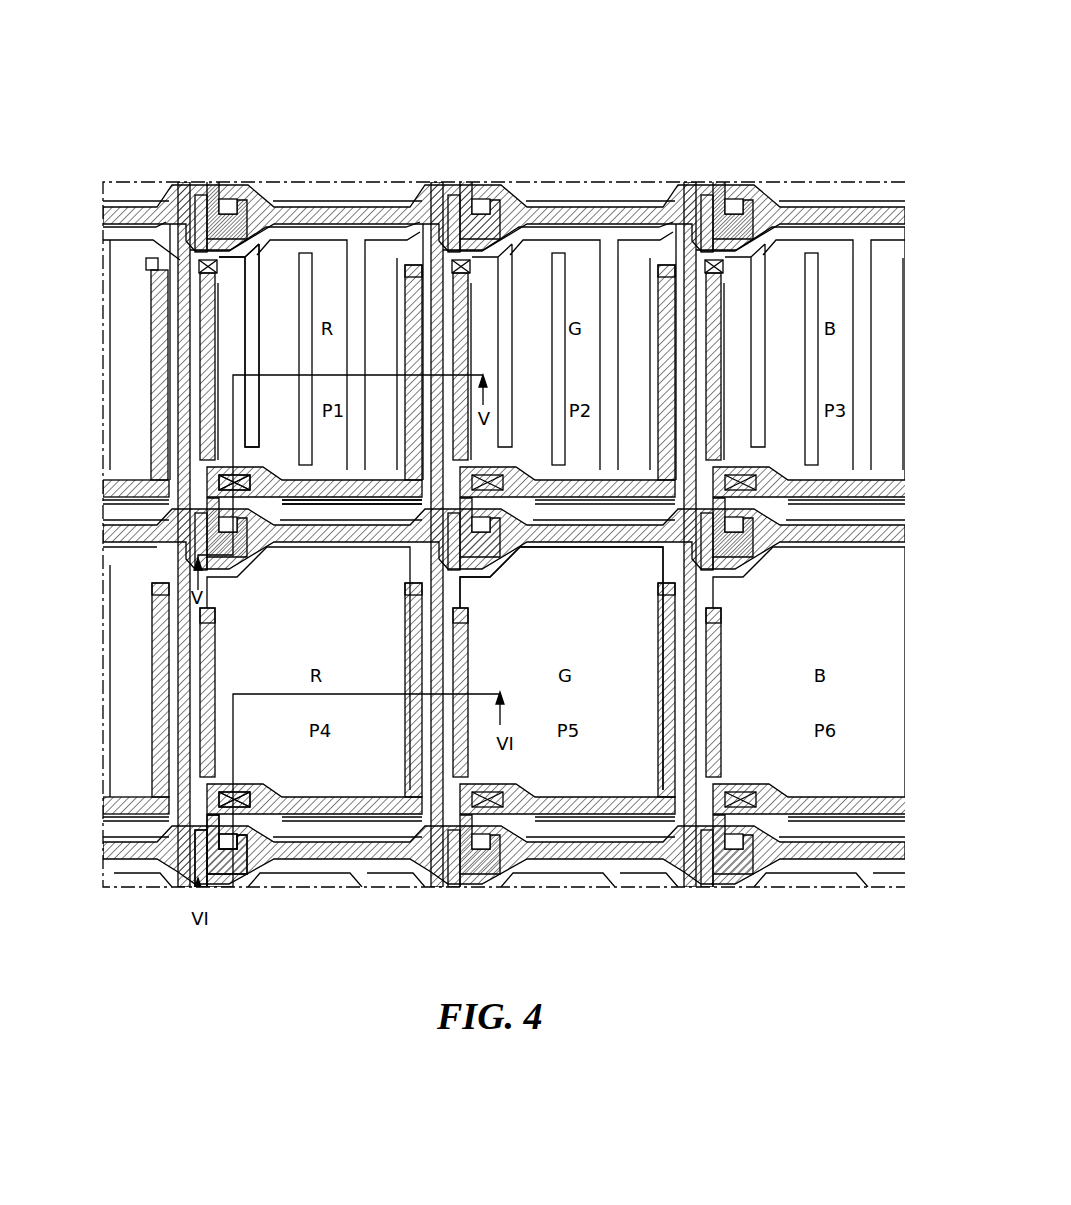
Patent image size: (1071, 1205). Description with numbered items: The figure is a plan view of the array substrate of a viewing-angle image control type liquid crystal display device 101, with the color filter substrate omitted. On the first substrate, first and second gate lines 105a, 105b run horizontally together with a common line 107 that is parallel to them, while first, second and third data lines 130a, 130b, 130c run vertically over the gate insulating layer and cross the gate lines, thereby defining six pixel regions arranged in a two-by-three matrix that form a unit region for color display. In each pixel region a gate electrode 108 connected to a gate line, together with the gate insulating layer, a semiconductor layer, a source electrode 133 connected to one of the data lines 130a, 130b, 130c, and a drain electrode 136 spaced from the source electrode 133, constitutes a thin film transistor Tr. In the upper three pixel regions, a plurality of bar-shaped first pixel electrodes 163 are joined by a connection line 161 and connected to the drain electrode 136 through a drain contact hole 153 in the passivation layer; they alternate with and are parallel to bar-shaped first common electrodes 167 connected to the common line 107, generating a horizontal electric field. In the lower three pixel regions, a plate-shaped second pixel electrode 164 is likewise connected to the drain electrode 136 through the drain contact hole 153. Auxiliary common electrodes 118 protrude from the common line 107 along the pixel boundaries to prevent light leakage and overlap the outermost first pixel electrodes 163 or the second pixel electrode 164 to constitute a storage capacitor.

The viewing-angle image control type liquid crystal display device 101 is at (875, 142).
The first gate line 105a is at (320, 535).
The second gate line 105b is at (305, 850).
The common line 107 is at (362, 492).
The gate electrode 108 is at (197, 880).
The auxiliary common electrodes 118 is at (212, 303).
The first data line 130a is at (183, 402).
The second data line 130b is at (438, 353).
The third data line 130c is at (690, 350).
The source electrode 133 is at (217, 882).
The drain electrode 136 is at (242, 822).
The drain contact hole 153 is at (247, 472).
The connection line 161 is at (303, 503).
The first pixel electrodes 163 is at (217, 280).
The second pixel electrode 164 is at (440, 587).
The first common electrodes 167 is at (249, 333).
The thin film transistor Tr is at (172, 822).